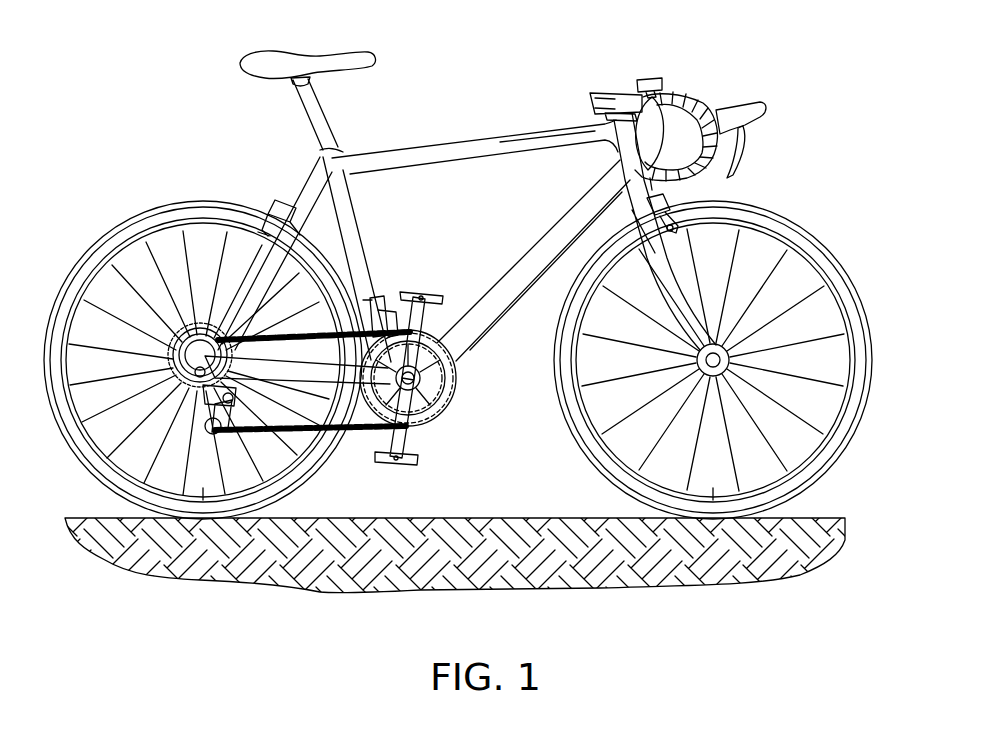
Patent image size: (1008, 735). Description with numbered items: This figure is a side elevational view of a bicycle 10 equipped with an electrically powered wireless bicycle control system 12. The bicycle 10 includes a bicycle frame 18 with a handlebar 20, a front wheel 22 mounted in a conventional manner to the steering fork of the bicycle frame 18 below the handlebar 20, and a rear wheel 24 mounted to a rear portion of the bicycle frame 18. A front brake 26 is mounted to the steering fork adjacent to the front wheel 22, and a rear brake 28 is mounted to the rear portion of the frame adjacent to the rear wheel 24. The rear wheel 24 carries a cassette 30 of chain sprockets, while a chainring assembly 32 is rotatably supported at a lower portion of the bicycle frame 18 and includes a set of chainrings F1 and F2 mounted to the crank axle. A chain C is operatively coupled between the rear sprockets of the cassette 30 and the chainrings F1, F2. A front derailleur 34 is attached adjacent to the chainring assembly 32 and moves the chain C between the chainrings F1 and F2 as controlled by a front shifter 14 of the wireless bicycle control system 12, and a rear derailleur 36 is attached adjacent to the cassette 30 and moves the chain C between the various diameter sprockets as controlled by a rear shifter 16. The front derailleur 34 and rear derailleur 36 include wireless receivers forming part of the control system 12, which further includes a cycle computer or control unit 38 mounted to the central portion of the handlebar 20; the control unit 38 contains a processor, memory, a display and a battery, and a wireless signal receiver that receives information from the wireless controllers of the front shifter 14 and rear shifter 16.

The bicycle 10 is at (458, 267).
The wireless bicycle control system 12 is at (789, 129).
The front shifter 14 is at (789, 129).
The rear shifter 16 is at (767, 137).
The bicycle frame 18 is at (460, 137).
The handlebar 20 is at (683, 92).
The front wheel 22 is at (782, 225).
The rear wheel 24 is at (118, 235).
The front brake 26 is at (662, 200).
The rear brake 28 is at (280, 205).
The cassette 30 is at (185, 345).
The chainring assembly 32 is at (442, 378).
The front derailleur 34 is at (392, 300).
The rear derailleur 36 is at (206, 436).
The cycle computer or control unit 38 is at (648, 78).
The chainring F1 is at (450, 345).
The chainring F2 is at (440, 398).
The chain C is at (365, 434).